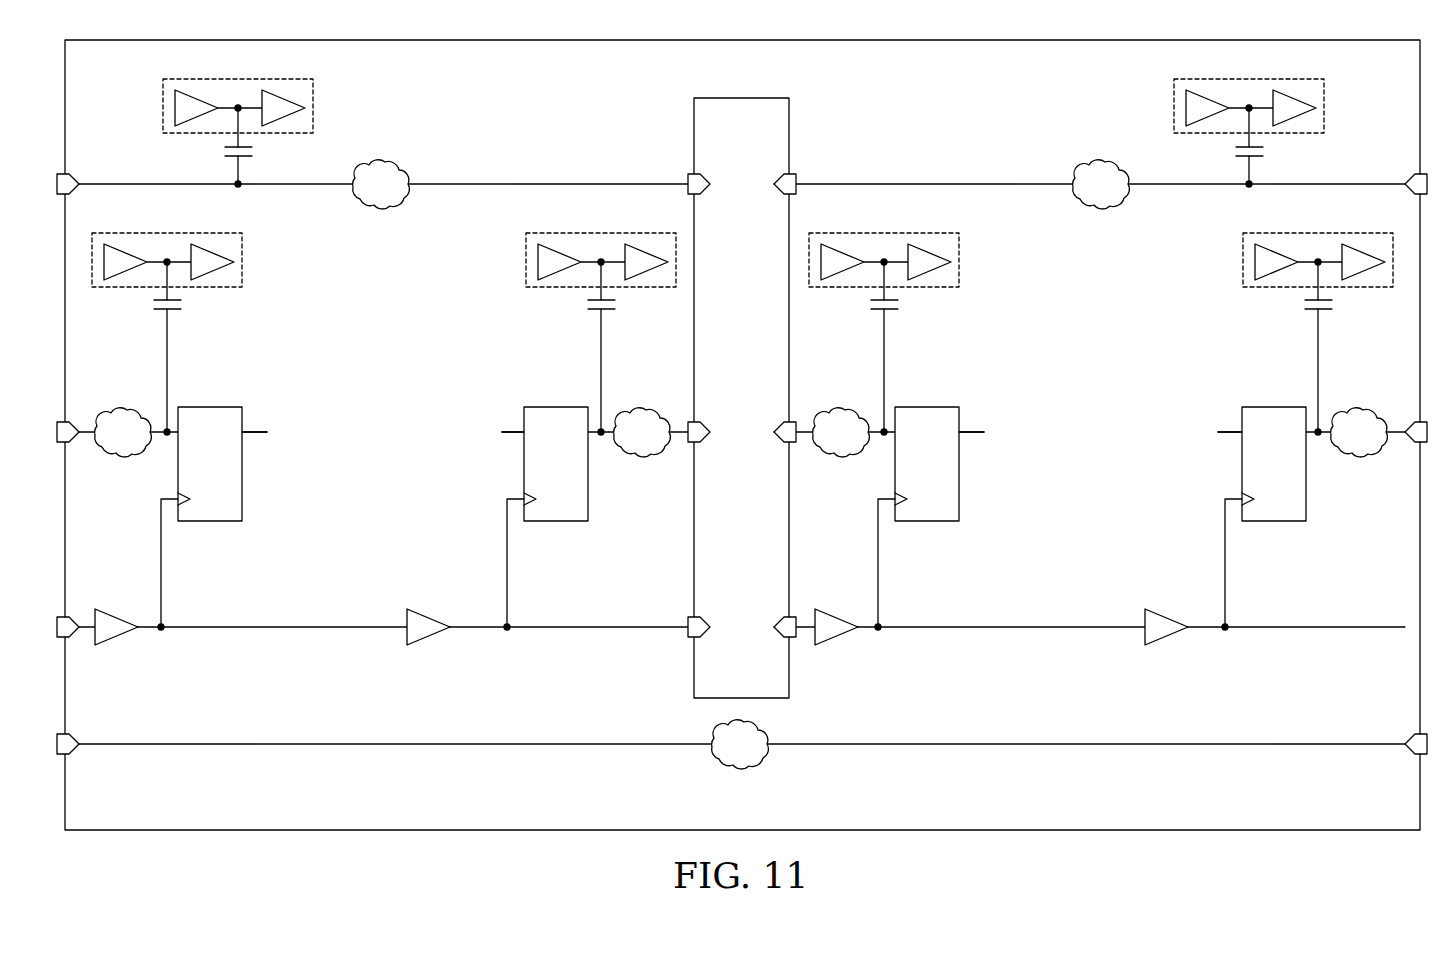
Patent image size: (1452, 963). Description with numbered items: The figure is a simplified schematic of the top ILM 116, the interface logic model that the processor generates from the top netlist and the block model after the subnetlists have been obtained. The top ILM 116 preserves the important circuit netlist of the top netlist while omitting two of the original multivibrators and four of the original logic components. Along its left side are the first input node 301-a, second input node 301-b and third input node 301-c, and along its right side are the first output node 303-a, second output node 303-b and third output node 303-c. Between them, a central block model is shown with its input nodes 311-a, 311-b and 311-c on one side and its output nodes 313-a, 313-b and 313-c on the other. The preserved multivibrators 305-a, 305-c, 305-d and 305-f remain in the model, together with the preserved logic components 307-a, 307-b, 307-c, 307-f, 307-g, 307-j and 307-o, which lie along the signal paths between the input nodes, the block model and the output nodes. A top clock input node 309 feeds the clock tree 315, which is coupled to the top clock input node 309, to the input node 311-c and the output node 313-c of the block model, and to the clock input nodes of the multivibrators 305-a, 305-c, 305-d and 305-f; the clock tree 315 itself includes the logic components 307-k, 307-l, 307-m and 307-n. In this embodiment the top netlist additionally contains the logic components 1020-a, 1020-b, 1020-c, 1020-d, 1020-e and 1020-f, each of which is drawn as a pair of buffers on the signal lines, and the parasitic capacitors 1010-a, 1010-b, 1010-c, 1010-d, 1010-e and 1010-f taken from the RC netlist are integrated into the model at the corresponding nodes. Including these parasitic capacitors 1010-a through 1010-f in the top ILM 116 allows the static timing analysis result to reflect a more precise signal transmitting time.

The top ILM 116 is at (135, 21).
The first input node 301-a is at (83, 178).
The second input node 301-b is at (78, 444).
The third input node 301-c is at (71, 756).
The first output node 303-a is at (1410, 175).
The second output node 303-b is at (1413, 446).
The third output node 303-c is at (1412, 758).
The multivibrator 305-a is at (196, 407).
The multivibrator 305-c is at (542, 407).
The multivibrator 305-d is at (914, 407).
The multivibrator 305-f is at (1260, 407).
The logic component 307-a is at (385, 212).
The logic component 307-b is at (1105, 212).
The logic component 307-c is at (126, 460).
The logic component 307-f is at (645, 460).
The logic component 307-g is at (844, 460).
The logic component 307-j is at (1362, 460).
The logic component 307-o is at (743, 772).
The logic component 307-k is at (118, 646).
The logic component 307-l is at (430, 646).
The logic component 307-m is at (838, 646).
The logic component 307-n is at (1168, 646).
The top clock input node 309 is at (79, 639).
The clock tree 315 is at (597, 629).
The input node 311-a is at (706, 197).
The input node 311-b is at (706, 445).
The input node 311-c is at (706, 640).
The output node 313-a is at (778, 175).
The output node 313-b is at (778, 422).
The output node 313-c is at (778, 617).
The parasitic capacitor 1010-a is at (225, 151).
The parasitic capacitor 1010-b is at (589, 306).
The parasitic capacitor 1010-c is at (1237, 149).
The parasitic capacitor 1010-d is at (872, 306).
The parasitic capacitor 1010-e is at (155, 306).
The parasitic capacitor 1010-f is at (1306, 306).
The logic component 1020-a is at (175, 79).
The logic component 1020-b is at (538, 233).
The logic component 1020-c is at (1186, 79).
The logic component 1020-d is at (815, 233).
The logic component 1020-e is at (101, 233).
The logic component 1020-f is at (1255, 233).